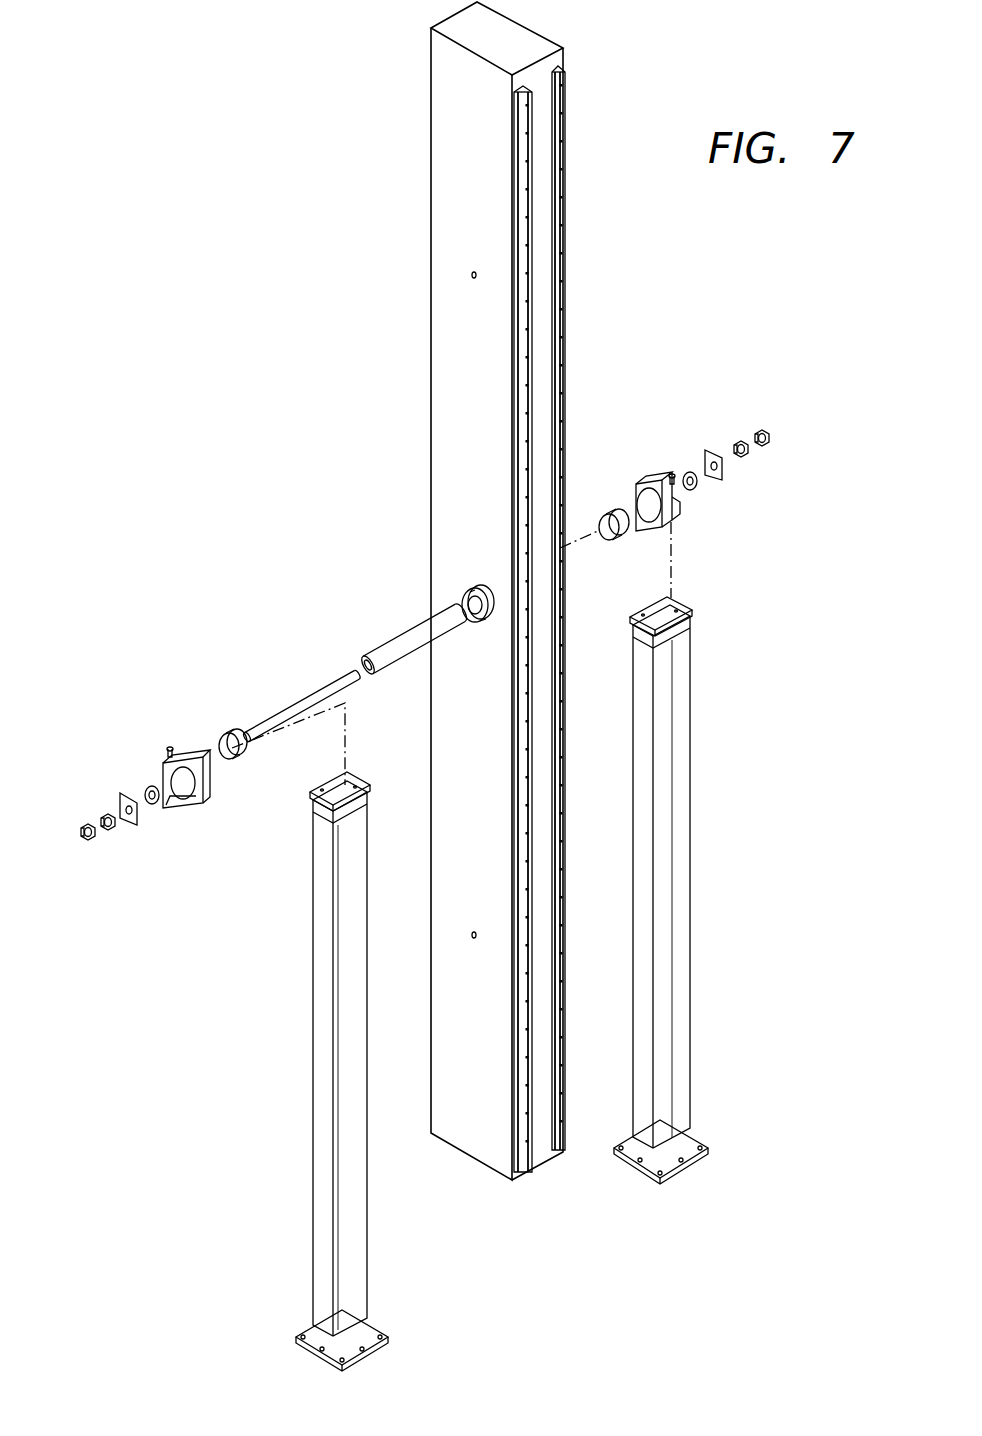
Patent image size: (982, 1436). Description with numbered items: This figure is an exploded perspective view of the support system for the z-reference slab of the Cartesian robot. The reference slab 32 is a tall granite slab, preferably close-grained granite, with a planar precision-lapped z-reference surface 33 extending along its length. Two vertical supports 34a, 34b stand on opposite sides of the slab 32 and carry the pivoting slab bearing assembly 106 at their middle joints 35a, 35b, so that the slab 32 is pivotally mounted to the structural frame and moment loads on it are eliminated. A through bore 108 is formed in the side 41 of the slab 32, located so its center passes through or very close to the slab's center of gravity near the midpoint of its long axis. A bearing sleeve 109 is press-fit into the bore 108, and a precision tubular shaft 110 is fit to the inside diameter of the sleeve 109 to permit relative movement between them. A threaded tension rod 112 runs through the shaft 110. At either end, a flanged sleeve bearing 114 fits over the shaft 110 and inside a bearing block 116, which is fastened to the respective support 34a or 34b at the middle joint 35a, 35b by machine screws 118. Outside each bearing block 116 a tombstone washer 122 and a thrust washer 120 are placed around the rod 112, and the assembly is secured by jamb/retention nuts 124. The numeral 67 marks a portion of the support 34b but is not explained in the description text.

The reference slab 32 is at (430, 363).
The z-reference surface 33 is at (543, 1140).
The vertical support 34a is at (690, 915).
The vertical support 34b is at (312, 1100).
The middle joint 35a is at (680, 600).
The middle joint 35b is at (327, 783).
The side 41 is at (450, 95).
The post face 67 is at (347, 967).
The pivoting slab bearing assembly 106 is at (753, 501).
The through bore 108 is at (468, 596).
The bearing sleeve 109 is at (466, 604).
The tubular shaft 110 is at (388, 648).
The threaded tension rod 112 is at (337, 683).
The flanged sleeve bearing 114 is at (232, 742).
The bearing block 116 is at (188, 758).
The machine screws 118 is at (168, 754).
The thrust washer 120 is at (153, 803).
The tombstone washer 122 is at (125, 800).
The jamb/retention nuts 124 is at (108, 834).